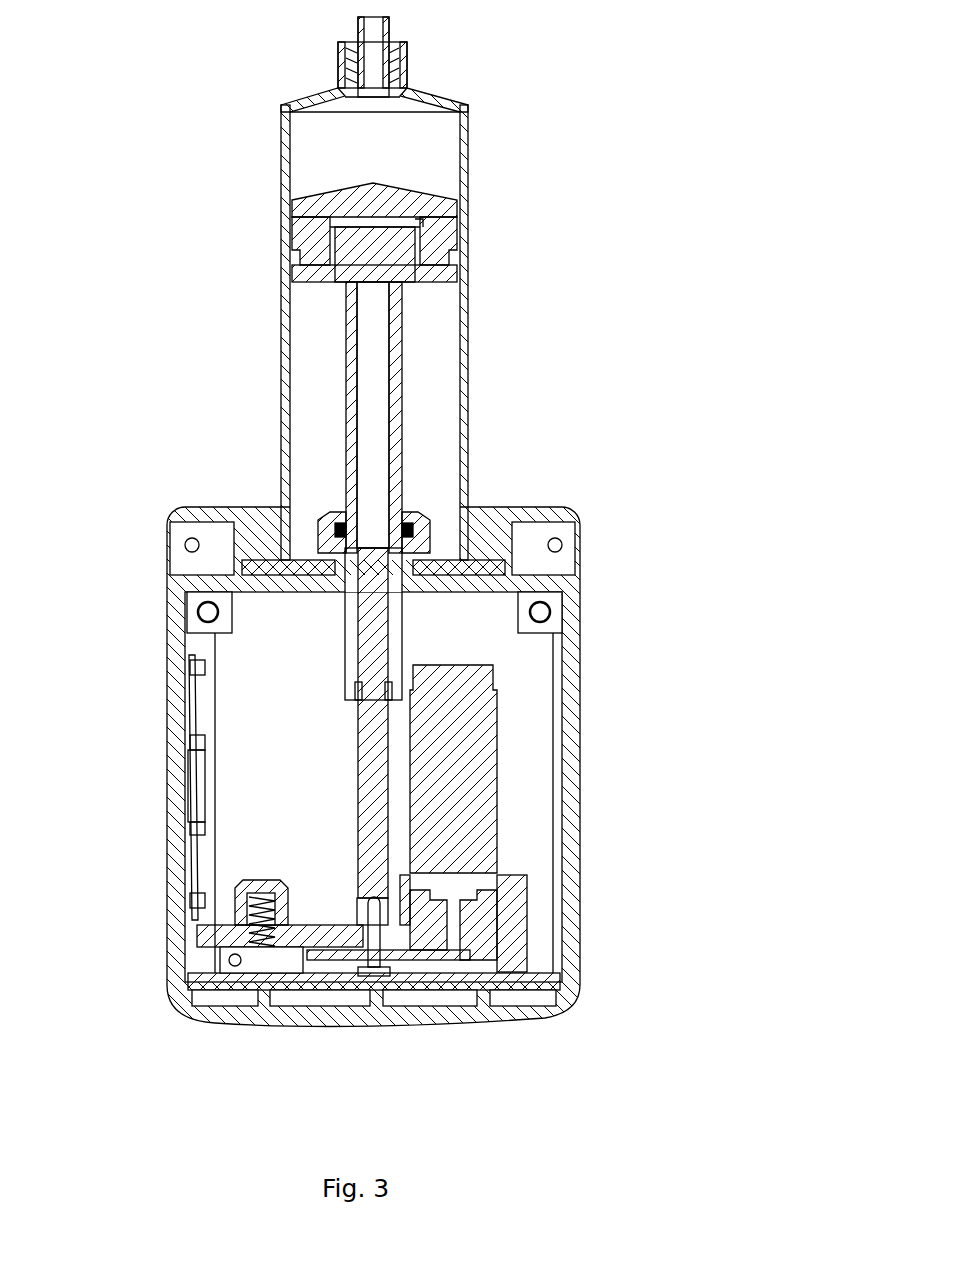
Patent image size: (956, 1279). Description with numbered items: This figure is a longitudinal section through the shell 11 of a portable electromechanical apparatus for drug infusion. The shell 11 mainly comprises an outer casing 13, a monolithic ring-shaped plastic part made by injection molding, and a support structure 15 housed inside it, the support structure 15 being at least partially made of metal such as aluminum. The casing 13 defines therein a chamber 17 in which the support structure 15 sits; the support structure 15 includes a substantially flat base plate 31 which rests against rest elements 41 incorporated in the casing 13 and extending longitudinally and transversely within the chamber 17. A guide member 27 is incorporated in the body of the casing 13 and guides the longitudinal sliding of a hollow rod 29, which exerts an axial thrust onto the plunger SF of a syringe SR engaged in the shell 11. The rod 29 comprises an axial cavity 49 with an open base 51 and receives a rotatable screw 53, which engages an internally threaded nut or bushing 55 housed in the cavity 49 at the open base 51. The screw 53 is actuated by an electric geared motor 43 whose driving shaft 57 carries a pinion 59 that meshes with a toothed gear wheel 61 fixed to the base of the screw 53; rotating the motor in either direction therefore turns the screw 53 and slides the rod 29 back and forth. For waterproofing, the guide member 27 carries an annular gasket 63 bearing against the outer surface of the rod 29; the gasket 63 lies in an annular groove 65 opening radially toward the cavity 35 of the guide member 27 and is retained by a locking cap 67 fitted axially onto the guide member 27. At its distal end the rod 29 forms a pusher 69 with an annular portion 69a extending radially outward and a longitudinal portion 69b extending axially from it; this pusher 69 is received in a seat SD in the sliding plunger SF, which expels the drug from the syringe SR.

The shell 11 is at (150, 1032).
The outer casing 13 is at (592, 612).
The support structure 15 is at (441, 1012).
The chamber 17 is at (298, 776).
The guide member 27 is at (470, 545).
The longitudinally slidable rod 29 is at (350, 365).
The base plate 31 is at (233, 966).
The cavity of the guide member 35 is at (385, 545).
The rest elements 41 is at (370, 980).
The electric geared motor 43 is at (497, 740).
The axial cavity 49 is at (375, 350).
The open base 51 is at (352, 700).
The rotatable screw 53 is at (352, 800).
The internally threaded nut or bushing 55 is at (350, 660).
The driving shaft 57 is at (470, 915).
The pinion 59 is at (510, 985).
The toothed gear wheel 61 is at (290, 1000).
The annular gasket 63 is at (340, 520).
The annular groove 65 is at (410, 528).
The locking cap 67 is at (328, 525).
The pusher 69 is at (445, 297).
The annular portion 69a is at (290, 272).
The longitudinal portion 69b is at (430, 222).
The seat SD is at (398, 218).
The plunger SF is at (340, 190).
The syringe SR is at (470, 118).